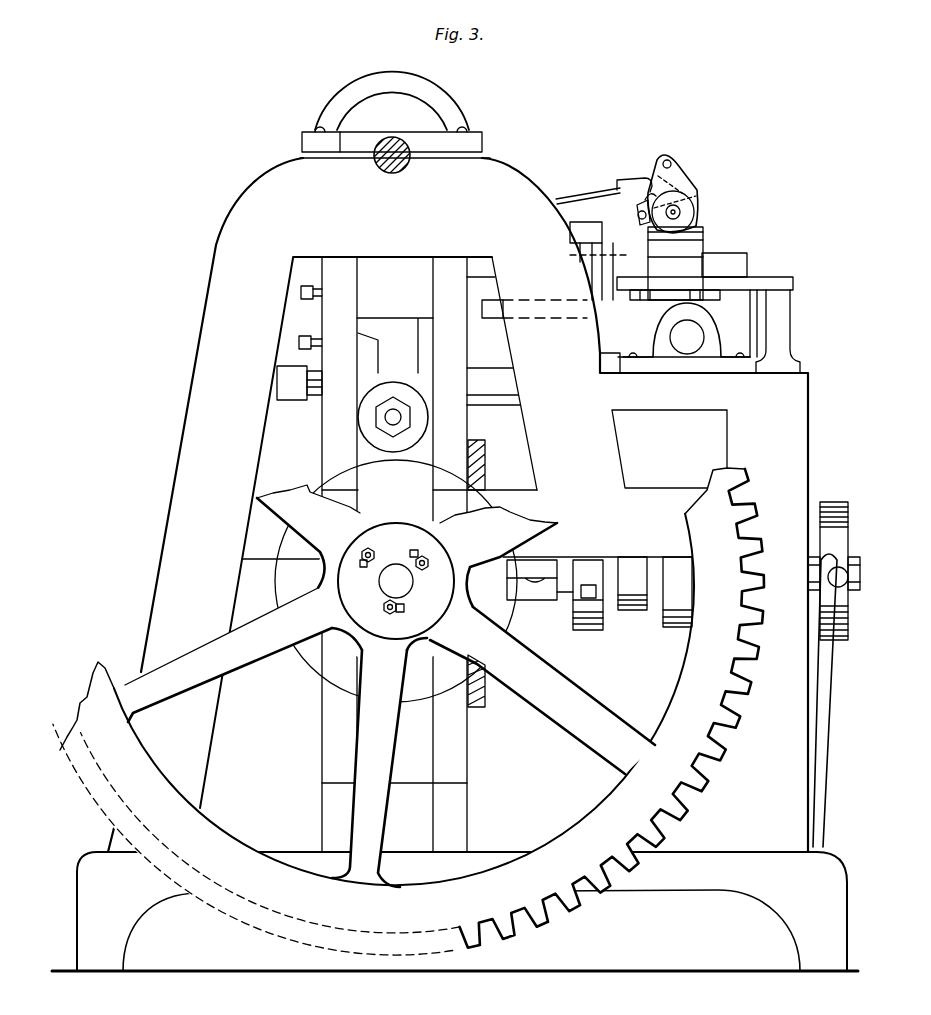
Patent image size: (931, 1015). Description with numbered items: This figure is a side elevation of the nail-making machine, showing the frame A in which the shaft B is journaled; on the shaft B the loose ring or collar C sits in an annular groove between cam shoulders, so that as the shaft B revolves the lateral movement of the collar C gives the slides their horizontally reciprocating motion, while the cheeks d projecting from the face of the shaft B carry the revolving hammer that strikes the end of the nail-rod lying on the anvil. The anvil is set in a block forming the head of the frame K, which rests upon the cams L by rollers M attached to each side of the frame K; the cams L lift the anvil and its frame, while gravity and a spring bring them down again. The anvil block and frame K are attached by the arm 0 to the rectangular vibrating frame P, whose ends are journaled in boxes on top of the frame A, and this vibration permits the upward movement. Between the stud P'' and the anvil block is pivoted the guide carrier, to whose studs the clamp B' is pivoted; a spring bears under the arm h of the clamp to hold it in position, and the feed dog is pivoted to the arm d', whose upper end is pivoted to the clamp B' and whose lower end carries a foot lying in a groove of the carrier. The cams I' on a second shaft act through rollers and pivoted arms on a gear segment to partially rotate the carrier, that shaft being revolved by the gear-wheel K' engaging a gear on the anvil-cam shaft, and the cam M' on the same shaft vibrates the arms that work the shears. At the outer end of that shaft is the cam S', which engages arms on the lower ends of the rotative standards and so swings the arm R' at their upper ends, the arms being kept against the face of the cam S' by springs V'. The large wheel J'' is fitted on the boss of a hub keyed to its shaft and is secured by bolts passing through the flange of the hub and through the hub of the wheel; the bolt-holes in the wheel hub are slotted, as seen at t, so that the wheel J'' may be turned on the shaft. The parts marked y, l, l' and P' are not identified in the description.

The frame A is at (455, 521).
The shaft B is at (392, 155).
The vertical guide bars y is at (394, 554).
The rollers M is at (393, 417).
The arm 0 is at (486, 379).
The frame K is at (408, 711).
The wheel J'' is at (228, 655).
The gear-wheel K' is at (396, 581).
The slotted bolt-holes t is at (386, 573).
The cams L is at (587, 578).
The small block P' is at (564, 603).
The cam M' is at (588, 602).
The cams I' is at (655, 592).
The vibrating frame P is at (686, 330).
The pillow block base l is at (713, 362).
The pillar l' is at (778, 331).
The arm R' is at (705, 284).
The stud P'' is at (724, 265).
The clamp B' is at (675, 235).
The cheeks d is at (673, 184).
The arm d' is at (648, 203).
The arm of clamp h is at (634, 181).
The collar C is at (588, 190).
The cam S' is at (834, 571).
The springs V' is at (824, 700).